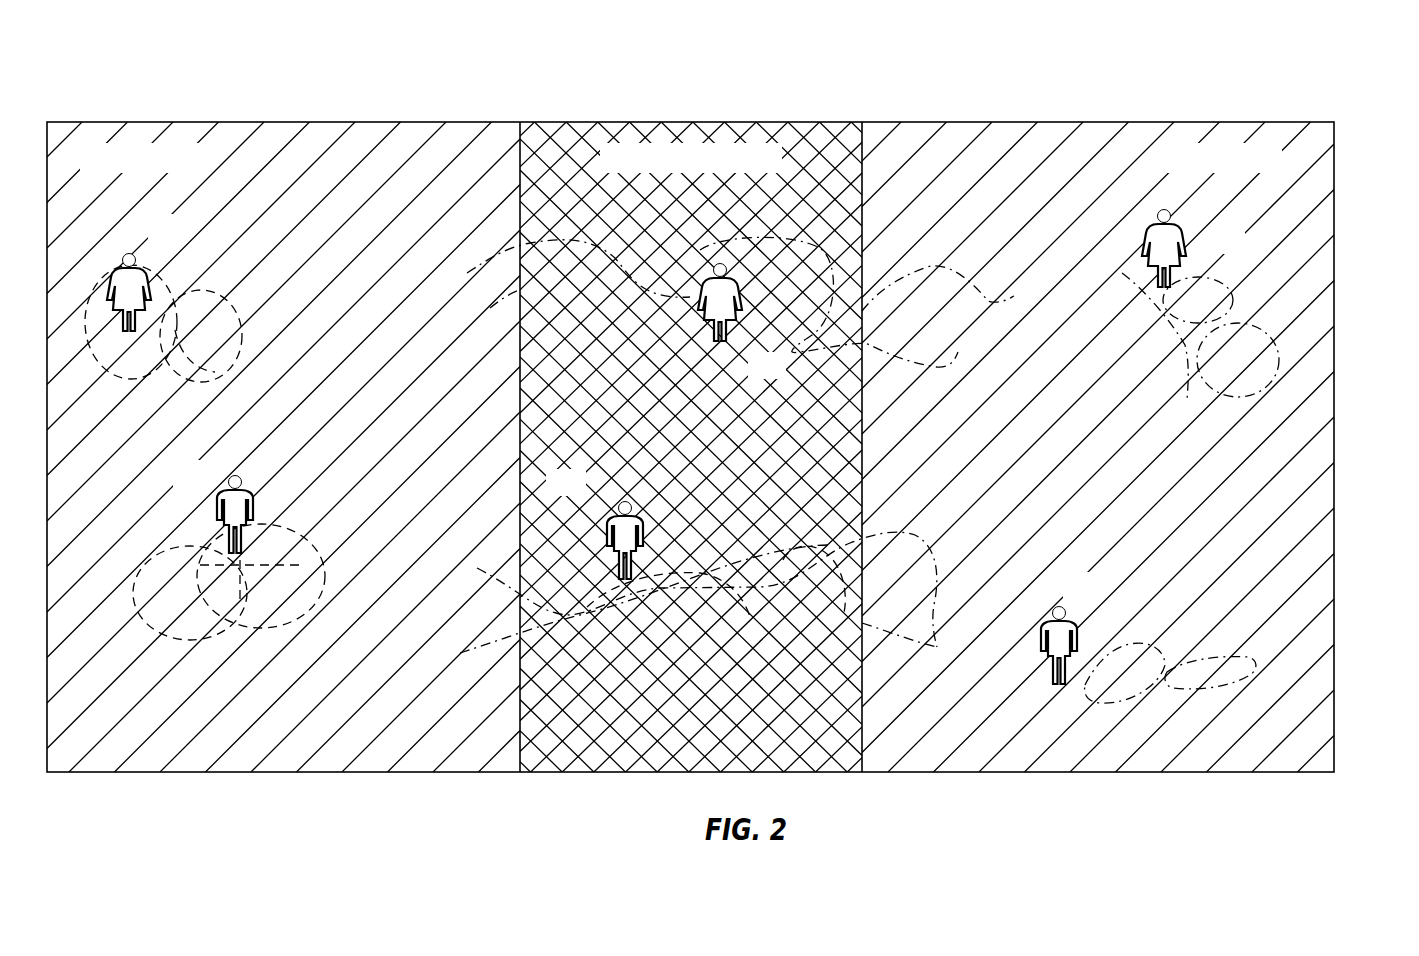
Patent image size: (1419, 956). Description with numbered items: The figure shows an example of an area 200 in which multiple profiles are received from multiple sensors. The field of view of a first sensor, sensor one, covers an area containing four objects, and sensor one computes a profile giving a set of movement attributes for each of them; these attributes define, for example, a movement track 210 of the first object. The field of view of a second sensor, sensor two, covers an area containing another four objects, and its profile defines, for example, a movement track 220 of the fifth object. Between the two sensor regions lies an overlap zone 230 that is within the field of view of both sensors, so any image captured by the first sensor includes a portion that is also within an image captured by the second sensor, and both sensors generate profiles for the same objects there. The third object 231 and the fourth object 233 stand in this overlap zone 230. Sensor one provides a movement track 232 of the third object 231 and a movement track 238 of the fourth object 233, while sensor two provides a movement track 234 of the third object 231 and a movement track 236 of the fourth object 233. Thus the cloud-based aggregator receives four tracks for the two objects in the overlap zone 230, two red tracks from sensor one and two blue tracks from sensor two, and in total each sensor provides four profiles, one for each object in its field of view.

The area 200 is at (1152, 60).
The movement track 210 is at (215, 290).
The movement track 220 is at (1280, 362).
The overlap zone 230 is at (658, 122).
The third object 231 is at (707, 322).
The movement track 232 is at (768, 223).
The fourth object 233 is at (633, 505).
The movement track 234 is at (937, 262).
The movement track 236 is at (490, 640).
The movement track 238 is at (624, 622).